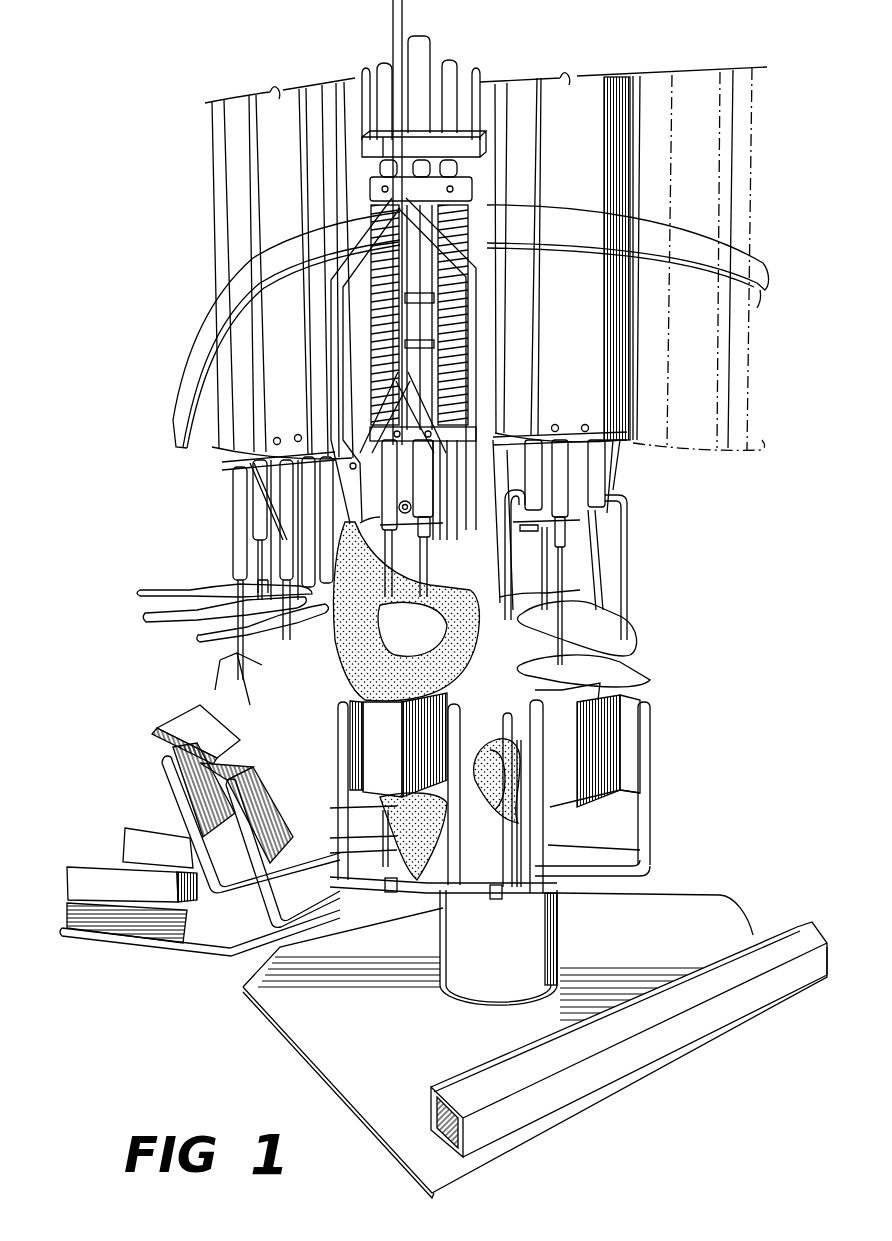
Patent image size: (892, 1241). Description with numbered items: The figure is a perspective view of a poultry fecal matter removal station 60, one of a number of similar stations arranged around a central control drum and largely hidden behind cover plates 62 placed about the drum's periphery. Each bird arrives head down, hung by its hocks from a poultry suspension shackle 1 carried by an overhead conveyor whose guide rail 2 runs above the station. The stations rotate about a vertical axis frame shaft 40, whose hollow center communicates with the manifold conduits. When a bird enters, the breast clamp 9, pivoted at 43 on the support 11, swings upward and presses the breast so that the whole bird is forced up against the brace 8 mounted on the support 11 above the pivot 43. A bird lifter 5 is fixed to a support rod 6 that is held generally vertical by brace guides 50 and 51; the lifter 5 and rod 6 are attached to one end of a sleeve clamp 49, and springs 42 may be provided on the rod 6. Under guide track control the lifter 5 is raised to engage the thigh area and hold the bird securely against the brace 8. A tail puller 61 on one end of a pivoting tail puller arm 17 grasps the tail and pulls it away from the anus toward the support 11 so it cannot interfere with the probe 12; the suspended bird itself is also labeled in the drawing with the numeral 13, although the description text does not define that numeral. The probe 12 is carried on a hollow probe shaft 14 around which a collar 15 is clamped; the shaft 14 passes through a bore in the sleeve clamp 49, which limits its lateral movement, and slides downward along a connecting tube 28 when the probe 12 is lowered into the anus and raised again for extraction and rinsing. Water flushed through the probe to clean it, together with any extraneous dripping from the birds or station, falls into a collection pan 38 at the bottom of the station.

The poultry suspension shackle 1 is at (390, 43).
The connecting tube 28 is at (418, 40).
The poultry fecal matter removal station 60 is at (454, 43).
The brace guide 50 is at (470, 145).
The sleeve clamp 49 is at (475, 190).
The cover plate 62 is at (270, 173).
The guide rail 2 is at (571, 237).
The spring 42 is at (390, 303).
The collar 15 is at (462, 315).
The probe shaft 14 is at (460, 352).
The brace guide 51 is at (467, 433).
The support rod 6 is at (624, 545).
The tail puller arm 17 is at (590, 562).
The probe 12 is at (565, 590).
The tail puller 61 is at (640, 600).
The leg 13 is at (640, 621).
The brace 8 is at (150, 595).
The bird lifter 5 is at (220, 660).
The breast clamp 9 is at (173, 723).
The support 11 is at (560, 840).
The pivot 43 is at (393, 887).
The vertical axis frame shaft 40 is at (514, 966).
The collection pan 38 is at (410, 1044).